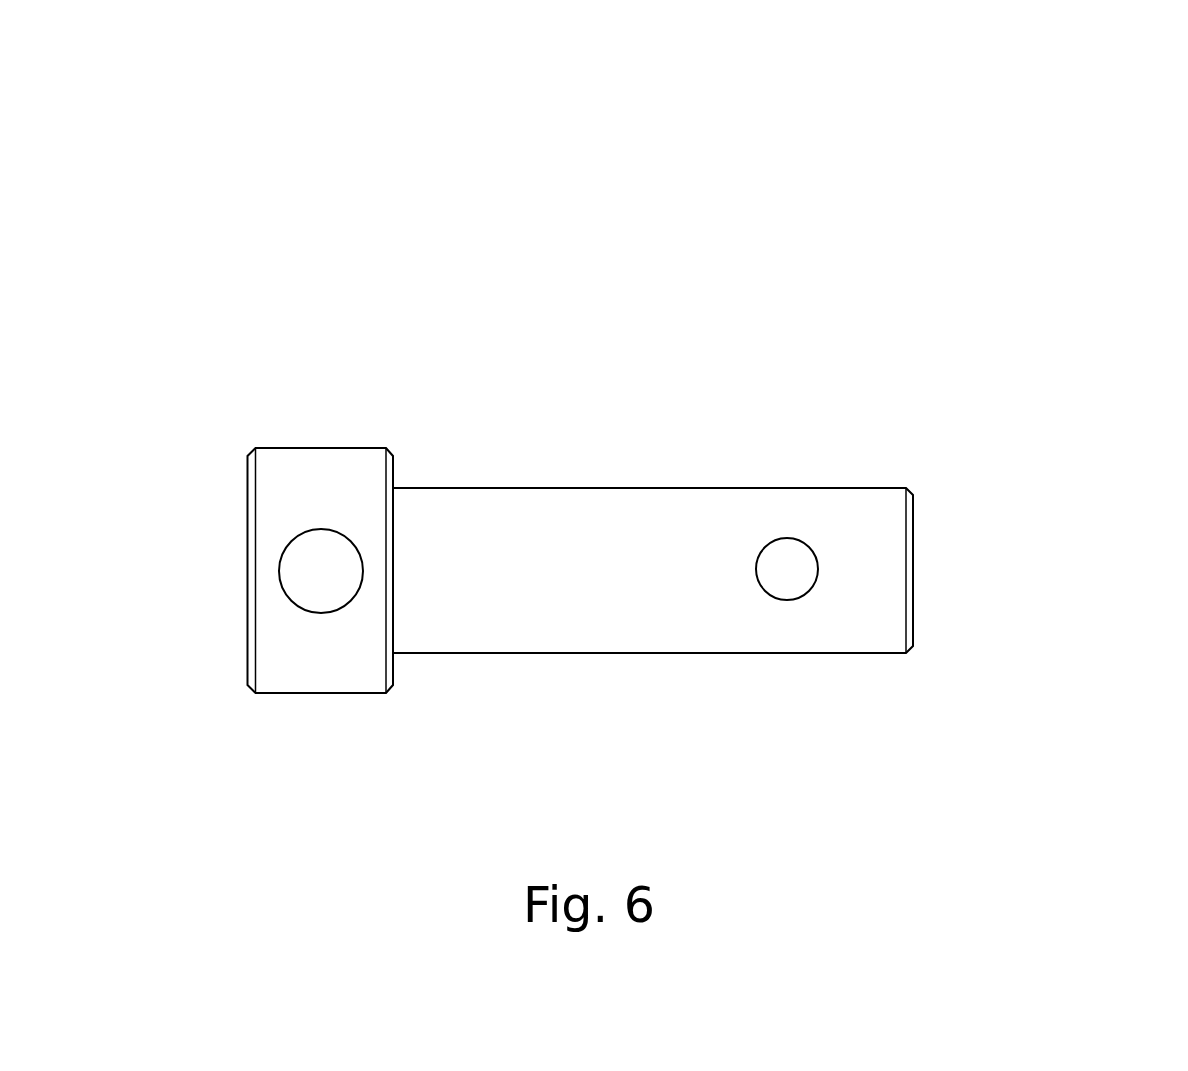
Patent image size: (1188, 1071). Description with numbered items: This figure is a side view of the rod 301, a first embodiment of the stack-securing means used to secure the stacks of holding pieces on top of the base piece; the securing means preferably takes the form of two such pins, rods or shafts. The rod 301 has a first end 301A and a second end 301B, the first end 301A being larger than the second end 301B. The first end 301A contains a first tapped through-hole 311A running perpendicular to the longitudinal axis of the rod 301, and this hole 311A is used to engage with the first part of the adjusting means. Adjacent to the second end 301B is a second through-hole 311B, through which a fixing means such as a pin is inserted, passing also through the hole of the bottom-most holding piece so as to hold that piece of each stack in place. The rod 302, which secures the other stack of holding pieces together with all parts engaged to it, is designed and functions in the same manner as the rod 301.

The rod 301 is at (603, 434).
The rod 302 is at (600, 458).
The first end 301A is at (215, 638).
The second end 301B is at (757, 654).
The first tapped through-hole 311A is at (312, 589).
The second through-hole 311B is at (798, 581).